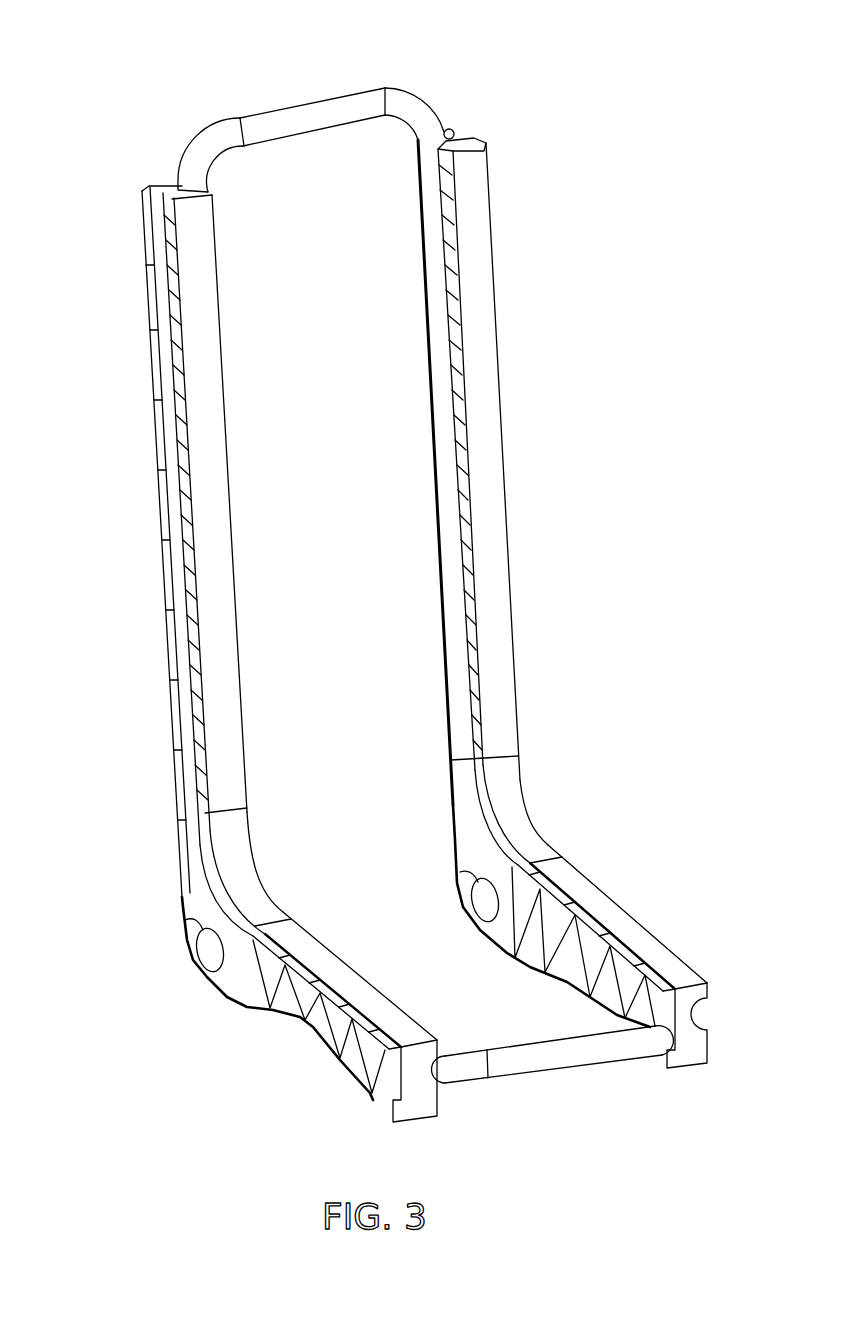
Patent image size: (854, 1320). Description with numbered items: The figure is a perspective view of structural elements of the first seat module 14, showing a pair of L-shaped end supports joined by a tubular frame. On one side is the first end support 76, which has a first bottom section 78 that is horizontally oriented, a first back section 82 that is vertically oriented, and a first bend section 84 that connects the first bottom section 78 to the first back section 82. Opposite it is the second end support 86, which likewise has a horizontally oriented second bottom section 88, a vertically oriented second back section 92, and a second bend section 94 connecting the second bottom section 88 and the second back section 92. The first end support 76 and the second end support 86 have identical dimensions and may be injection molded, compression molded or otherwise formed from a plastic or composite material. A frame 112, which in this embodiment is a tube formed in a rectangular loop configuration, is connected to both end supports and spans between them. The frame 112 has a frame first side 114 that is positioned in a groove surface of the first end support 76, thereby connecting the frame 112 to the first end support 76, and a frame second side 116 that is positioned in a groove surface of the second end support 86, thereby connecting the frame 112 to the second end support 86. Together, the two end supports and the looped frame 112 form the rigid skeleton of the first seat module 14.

The first seat module 14 is at (298, 100).
The first end support 76 is at (163, 180).
The first bottom section 78 is at (306, 1034).
The first back section 82 is at (147, 402).
The first bend section 84 is at (192, 961).
The second end support 86 is at (458, 125).
The second bottom section 88 is at (643, 919).
The second back section 92 is at (502, 361).
The second bend section 94 is at (546, 834).
The frame 112 is at (268, 118).
The frame first side 114 is at (147, 193).
The frame second side 116 is at (470, 460).